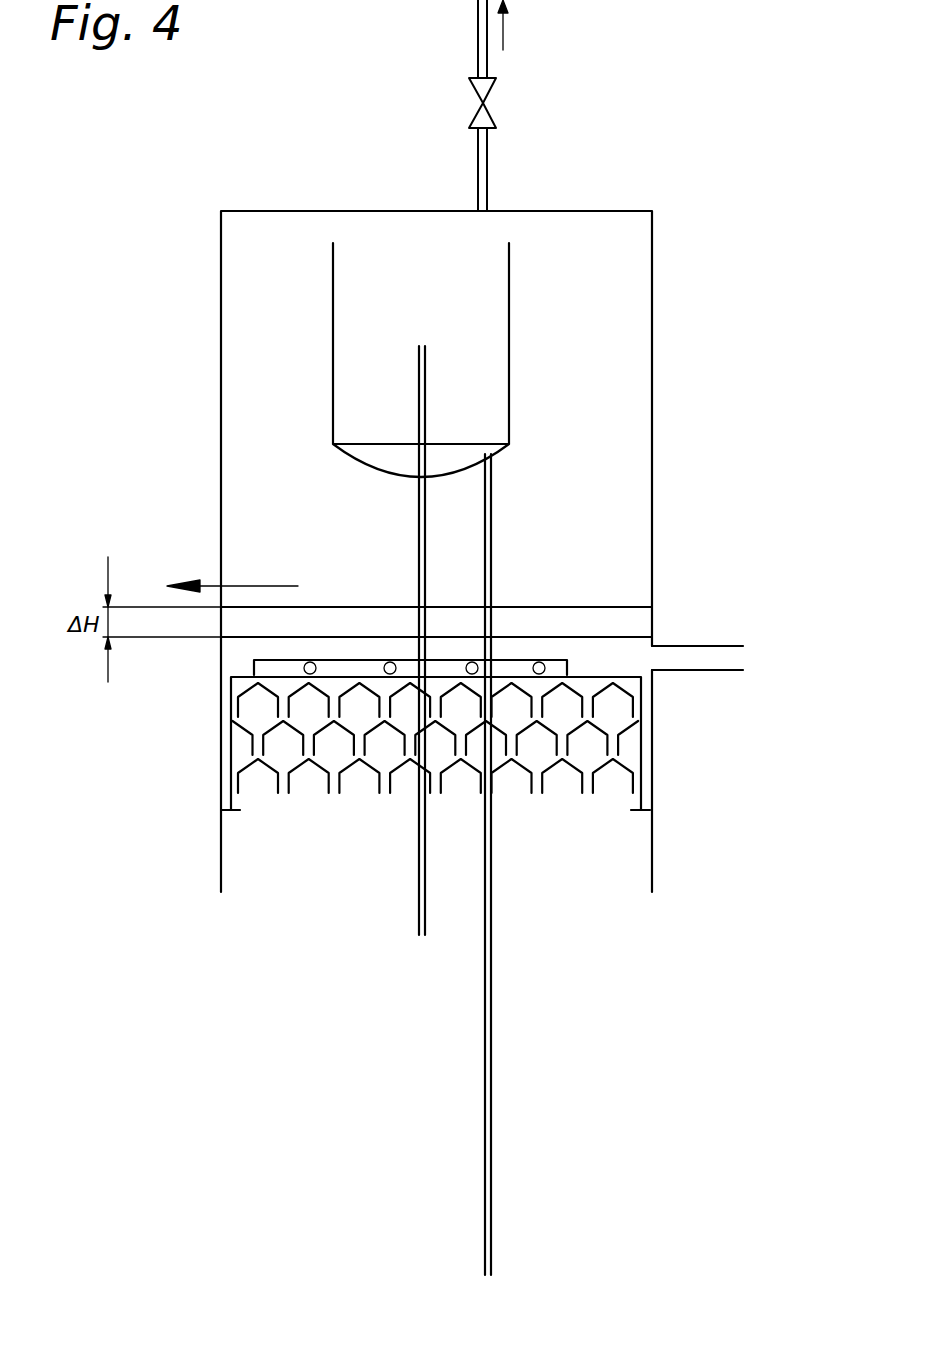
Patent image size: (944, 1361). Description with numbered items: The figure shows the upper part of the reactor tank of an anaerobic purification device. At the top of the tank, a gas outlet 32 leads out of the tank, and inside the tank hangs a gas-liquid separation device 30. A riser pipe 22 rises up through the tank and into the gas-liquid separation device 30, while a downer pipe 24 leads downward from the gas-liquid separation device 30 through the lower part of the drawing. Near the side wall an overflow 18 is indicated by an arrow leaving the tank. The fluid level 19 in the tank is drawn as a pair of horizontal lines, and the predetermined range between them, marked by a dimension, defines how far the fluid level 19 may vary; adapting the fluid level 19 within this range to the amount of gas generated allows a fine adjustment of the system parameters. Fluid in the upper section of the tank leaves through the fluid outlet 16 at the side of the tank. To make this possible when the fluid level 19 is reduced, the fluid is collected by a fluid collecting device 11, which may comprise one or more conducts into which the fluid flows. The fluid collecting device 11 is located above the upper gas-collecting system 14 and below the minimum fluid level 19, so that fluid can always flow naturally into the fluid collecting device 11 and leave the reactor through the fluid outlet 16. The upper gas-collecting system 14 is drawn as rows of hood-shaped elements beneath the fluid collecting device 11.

The fluid collecting device 11 is at (263, 669).
The upper gas-collecting system 14 is at (260, 776).
The fluid outlet 16 is at (652, 646).
The overflow 18 is at (212, 585).
The fluid level 19 is at (585, 625).
The riser pipe 22 is at (419, 526).
The downer pipe 24 is at (492, 528).
The gas-liquid separation device 30 is at (475, 332).
The gas outlet 32 is at (487, 211).